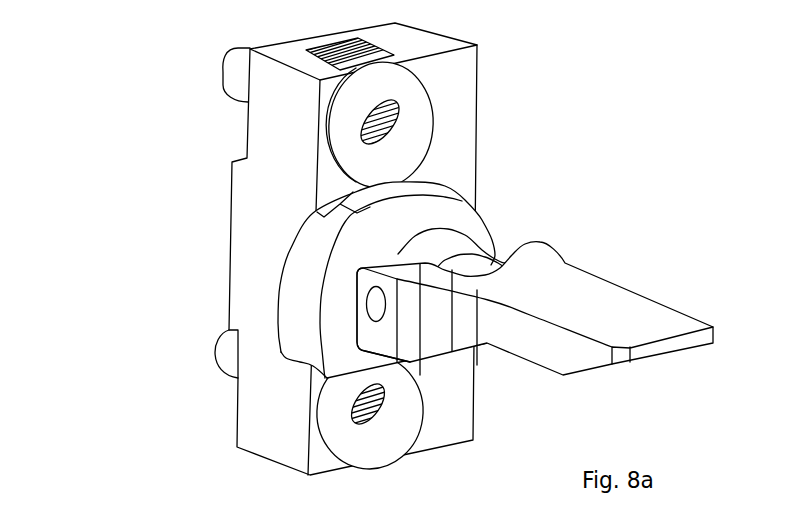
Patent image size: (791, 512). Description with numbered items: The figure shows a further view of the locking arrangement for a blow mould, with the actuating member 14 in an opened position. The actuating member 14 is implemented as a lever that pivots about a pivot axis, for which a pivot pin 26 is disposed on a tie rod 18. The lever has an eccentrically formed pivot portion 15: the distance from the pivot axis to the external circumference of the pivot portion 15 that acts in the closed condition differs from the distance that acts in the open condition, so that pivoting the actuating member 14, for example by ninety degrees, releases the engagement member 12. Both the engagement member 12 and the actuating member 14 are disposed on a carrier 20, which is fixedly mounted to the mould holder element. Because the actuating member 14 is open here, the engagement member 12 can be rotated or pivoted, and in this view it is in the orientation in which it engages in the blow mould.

The engagement member 12 is at (347, 257).
The actuating member 14 is at (422, 262).
The pivot portion 15 is at (270, 314).
The tie rod 18 is at (450, 252).
The carrier 20 is at (280, 422).
The pivot pin 26 is at (373, 302).